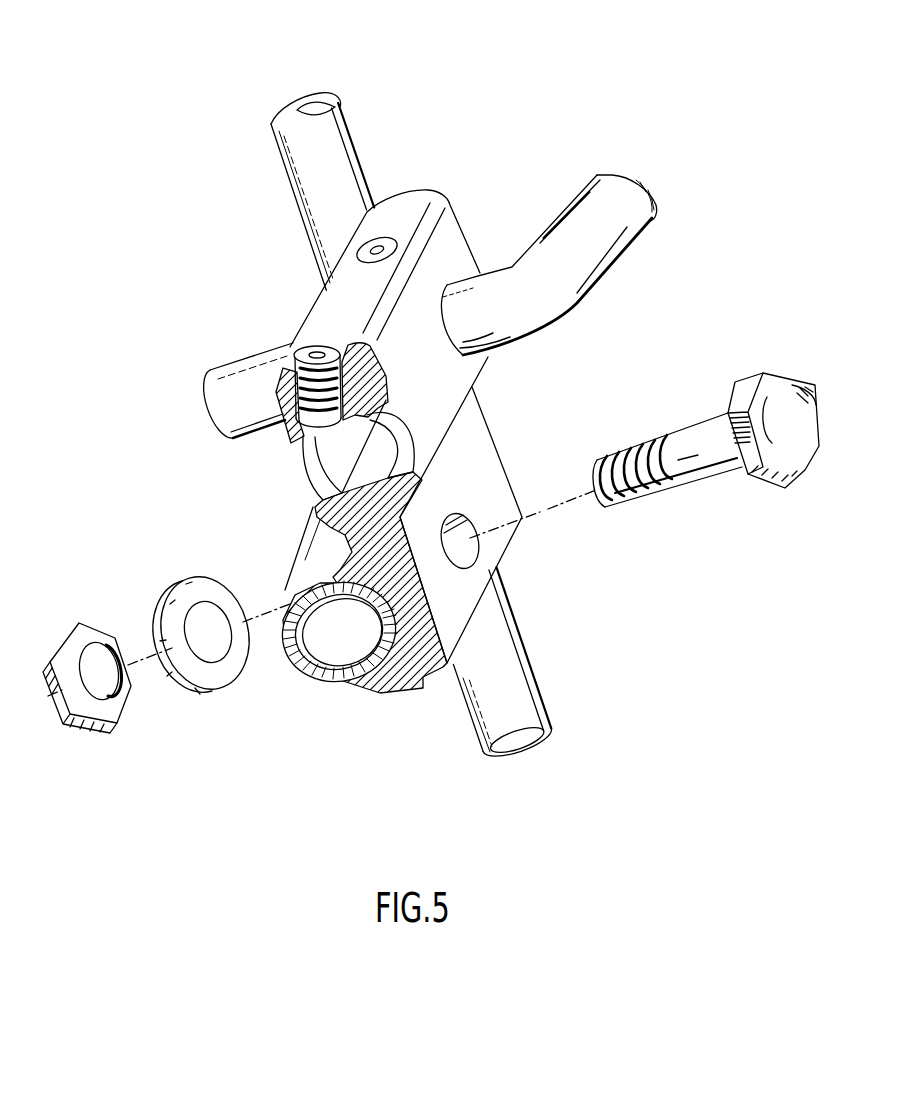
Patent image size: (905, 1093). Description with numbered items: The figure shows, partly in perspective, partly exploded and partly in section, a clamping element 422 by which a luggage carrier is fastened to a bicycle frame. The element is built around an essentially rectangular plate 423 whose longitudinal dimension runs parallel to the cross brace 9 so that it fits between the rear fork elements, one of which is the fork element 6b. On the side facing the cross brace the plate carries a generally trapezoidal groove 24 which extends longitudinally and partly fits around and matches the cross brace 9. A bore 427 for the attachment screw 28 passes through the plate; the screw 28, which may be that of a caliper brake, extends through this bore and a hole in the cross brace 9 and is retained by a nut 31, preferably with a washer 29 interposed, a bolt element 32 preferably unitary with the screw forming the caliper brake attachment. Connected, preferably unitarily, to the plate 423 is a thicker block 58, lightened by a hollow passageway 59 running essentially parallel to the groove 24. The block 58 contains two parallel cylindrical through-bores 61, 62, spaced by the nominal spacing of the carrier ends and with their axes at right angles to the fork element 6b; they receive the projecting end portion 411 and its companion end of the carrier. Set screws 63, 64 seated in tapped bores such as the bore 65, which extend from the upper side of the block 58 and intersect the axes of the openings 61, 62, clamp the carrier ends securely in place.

The clamping element 422 is at (490, 86).
The rear fork element 6b is at (337, 141).
The block 58 is at (415, 211).
The set screw 64 is at (385, 243).
The projecting end portion of the carrier 411 is at (549, 247).
The through-bore 62 is at (507, 342).
The set screw 63 is at (262, 430).
The tapped bore 65 is at (303, 391).
The hollow passageway 59 is at (373, 472).
The through-bore 61 is at (313, 468).
The essentially rectangular plate 423 is at (495, 490).
The bore 427 is at (461, 538).
The attachment screw 28 is at (657, 496).
The bolt element 32 is at (788, 423).
The cross brace 9 is at (330, 683).
The trapezoidal groove 24 is at (424, 667).
The washer 29 is at (217, 690).
The nut 31 is at (97, 733).